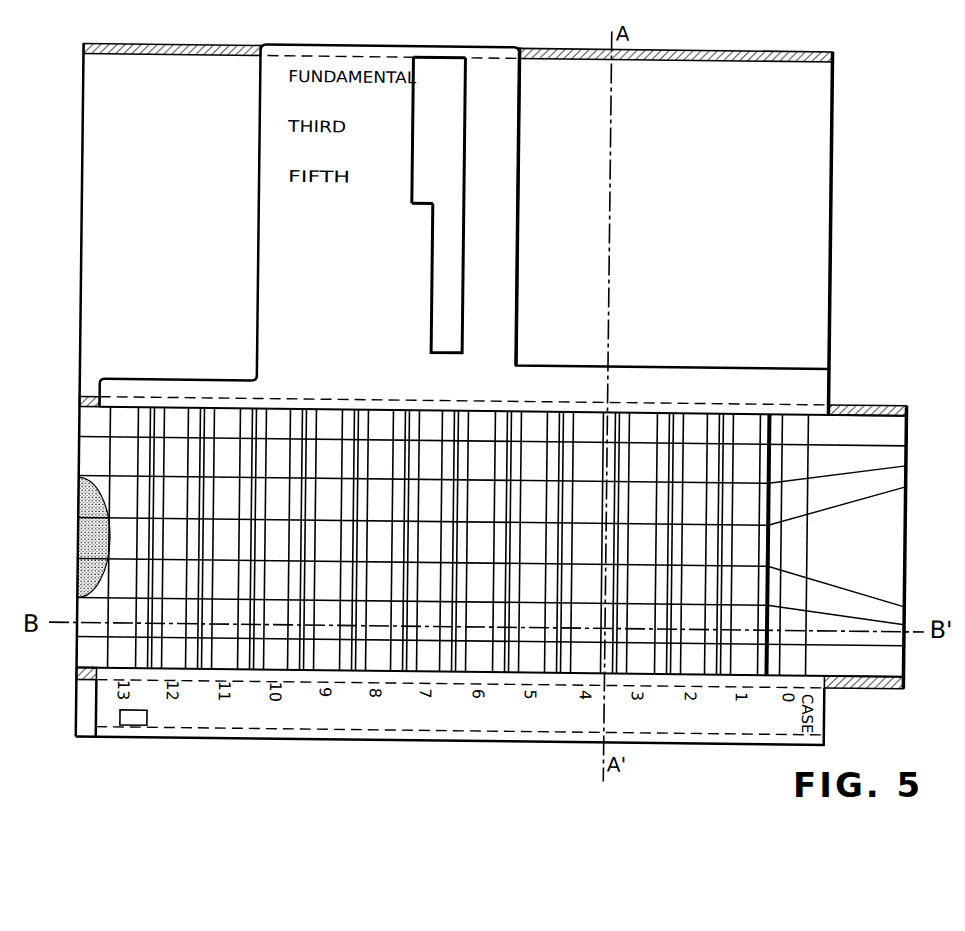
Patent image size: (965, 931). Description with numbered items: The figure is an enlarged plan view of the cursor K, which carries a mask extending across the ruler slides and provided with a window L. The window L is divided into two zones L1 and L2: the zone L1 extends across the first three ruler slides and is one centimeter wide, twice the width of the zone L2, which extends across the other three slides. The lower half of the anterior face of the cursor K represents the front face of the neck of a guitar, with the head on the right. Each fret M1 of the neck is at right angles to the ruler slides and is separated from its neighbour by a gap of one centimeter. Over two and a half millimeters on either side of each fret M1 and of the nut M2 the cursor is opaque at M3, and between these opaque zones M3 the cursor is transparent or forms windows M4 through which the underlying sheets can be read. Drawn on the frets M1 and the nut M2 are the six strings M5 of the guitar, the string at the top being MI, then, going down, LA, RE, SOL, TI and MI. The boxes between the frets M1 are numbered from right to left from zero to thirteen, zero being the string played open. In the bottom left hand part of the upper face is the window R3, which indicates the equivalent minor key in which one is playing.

The window L is at (659, 207).
The zone of window L L1 is at (410, 148).
The zone of window L L2 is at (437, 270).
The cursor K is at (485, 313).
The fret M1 is at (352, 674).
The nut M2 is at (761, 664).
The opaque zone M3 is at (444, 653).
The window M4 is at (275, 665).
The strings M5 is at (856, 441).
The window R3 is at (140, 724).